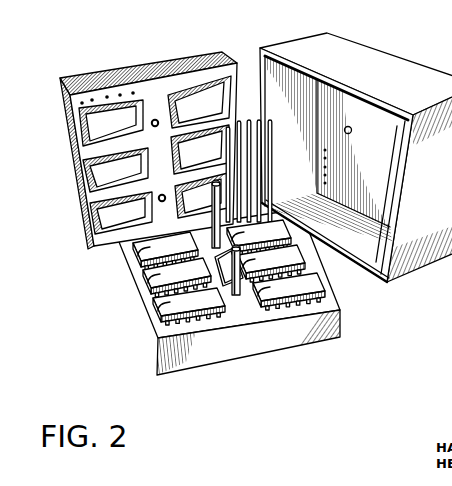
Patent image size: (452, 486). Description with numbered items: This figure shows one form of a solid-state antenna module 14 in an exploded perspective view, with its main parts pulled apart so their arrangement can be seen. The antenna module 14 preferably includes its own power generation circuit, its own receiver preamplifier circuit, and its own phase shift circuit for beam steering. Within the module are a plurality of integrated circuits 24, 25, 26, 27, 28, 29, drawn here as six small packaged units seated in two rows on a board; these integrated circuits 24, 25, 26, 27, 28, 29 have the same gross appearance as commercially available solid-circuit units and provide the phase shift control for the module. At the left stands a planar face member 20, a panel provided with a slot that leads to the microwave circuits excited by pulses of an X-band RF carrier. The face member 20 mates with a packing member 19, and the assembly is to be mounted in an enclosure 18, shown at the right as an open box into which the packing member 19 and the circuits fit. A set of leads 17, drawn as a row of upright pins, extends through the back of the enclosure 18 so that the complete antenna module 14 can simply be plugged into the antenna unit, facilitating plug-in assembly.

The antenna module 14 is at (133, 135).
The leads 17 is at (228, 150).
The enclosure 18 is at (410, 64).
The packing member 19 is at (69, 138).
The face member 20 is at (263, 343).
The integrated circuit 24 is at (133, 247).
The integrated circuit 25 is at (145, 275).
The integrated circuit 26 is at (155, 303).
The integrated circuit 27 is at (276, 230).
The integrated circuit 28 is at (284, 253).
The integrated circuit 29 is at (297, 286).